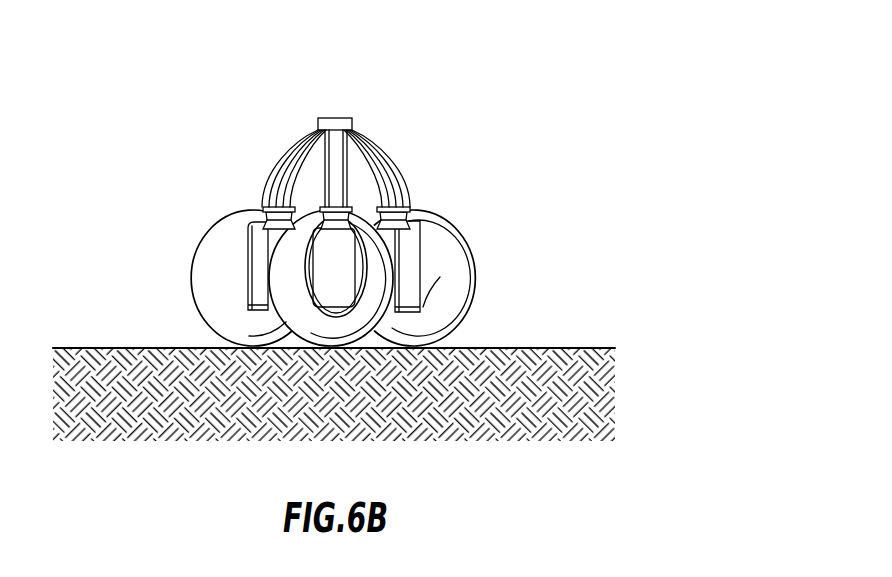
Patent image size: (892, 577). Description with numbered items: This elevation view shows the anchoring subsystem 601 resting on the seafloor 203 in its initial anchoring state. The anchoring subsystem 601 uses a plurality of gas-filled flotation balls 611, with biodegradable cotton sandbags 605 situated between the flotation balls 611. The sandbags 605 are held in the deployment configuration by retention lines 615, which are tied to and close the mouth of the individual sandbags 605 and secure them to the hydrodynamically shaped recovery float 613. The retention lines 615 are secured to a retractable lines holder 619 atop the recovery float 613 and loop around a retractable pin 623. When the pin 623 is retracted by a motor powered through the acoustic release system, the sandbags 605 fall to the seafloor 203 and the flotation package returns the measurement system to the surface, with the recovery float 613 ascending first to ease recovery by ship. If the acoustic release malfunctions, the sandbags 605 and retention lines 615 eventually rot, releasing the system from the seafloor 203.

The anchoring subsystem 601 is at (624, 106).
The seafloor 203 is at (590, 383).
The flotation balls 611 is at (200, 247).
The sandbags 605 is at (253, 243).
The retractable pin 623 is at (407, 220).
The retractable lines holder 619 is at (333, 118).
The recovery float 613 is at (277, 158).
The retention lines 615 is at (355, 140).